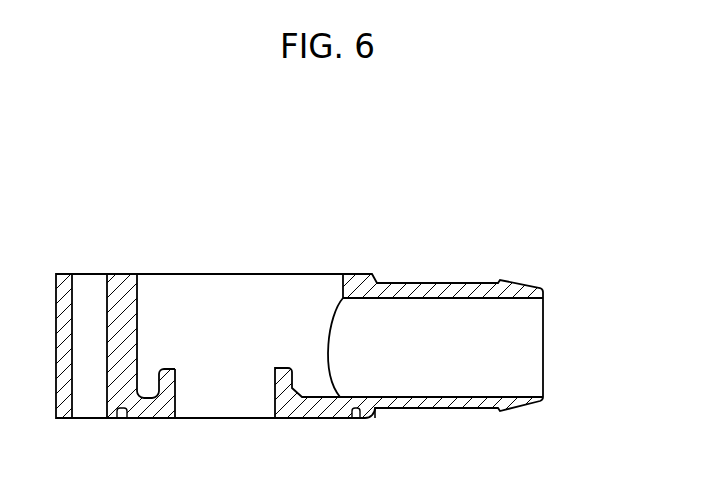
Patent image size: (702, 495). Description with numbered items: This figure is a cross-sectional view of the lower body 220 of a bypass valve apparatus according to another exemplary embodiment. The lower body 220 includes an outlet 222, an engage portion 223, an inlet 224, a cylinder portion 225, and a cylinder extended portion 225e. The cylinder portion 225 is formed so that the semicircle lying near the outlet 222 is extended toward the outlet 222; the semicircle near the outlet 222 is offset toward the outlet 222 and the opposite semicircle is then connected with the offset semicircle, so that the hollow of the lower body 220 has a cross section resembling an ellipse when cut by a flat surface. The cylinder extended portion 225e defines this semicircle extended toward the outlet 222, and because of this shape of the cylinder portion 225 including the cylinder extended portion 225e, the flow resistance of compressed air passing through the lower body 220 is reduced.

The lower body 220 is at (294, 326).
The outlet 222 is at (404, 330).
The engage portion 223 is at (62, 286).
The inlet 224 is at (231, 397).
The cylinder portion 225 is at (143, 291).
The cylinder extended portion 225e is at (339, 287).